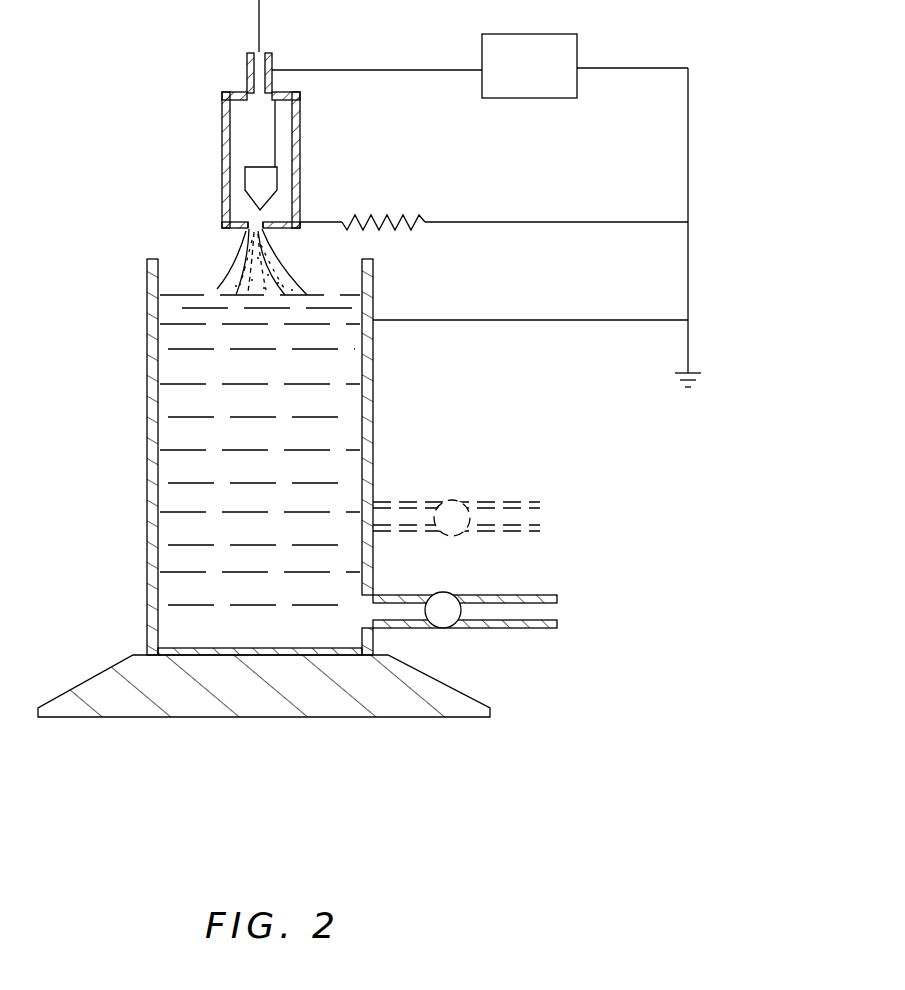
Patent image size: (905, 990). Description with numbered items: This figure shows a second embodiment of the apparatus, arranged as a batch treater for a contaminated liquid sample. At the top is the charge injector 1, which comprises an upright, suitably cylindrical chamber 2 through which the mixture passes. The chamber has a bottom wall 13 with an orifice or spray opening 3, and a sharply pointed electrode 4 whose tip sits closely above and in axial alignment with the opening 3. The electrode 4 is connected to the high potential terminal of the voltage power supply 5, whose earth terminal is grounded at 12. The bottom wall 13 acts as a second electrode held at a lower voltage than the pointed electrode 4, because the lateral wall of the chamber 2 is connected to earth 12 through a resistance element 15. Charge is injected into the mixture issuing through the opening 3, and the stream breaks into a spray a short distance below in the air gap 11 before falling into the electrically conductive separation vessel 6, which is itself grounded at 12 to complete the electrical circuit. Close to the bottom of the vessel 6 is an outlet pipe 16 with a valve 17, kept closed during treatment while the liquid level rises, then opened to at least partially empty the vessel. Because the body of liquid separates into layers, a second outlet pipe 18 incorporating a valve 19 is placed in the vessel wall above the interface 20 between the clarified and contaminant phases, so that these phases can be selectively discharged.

The charge injector 1 is at (220, 140).
The chamber 2 is at (300, 193).
The opening 3 is at (250, 230).
The pointed electrode 4 is at (262, 183).
The voltage power supply 5 is at (543, 84).
The separation vessel 6 is at (373, 396).
The air gap 11 is at (242, 279).
The earth 12 is at (690, 367).
The bottom wall 13 is at (283, 229).
The resistance element 15 is at (385, 222).
The outlet pipe 16 is at (498, 628).
The valve 17 is at (447, 592).
The second outlet pipe 18 is at (535, 500).
The valve 19 is at (446, 500).
The interface 20 is at (220, 572).